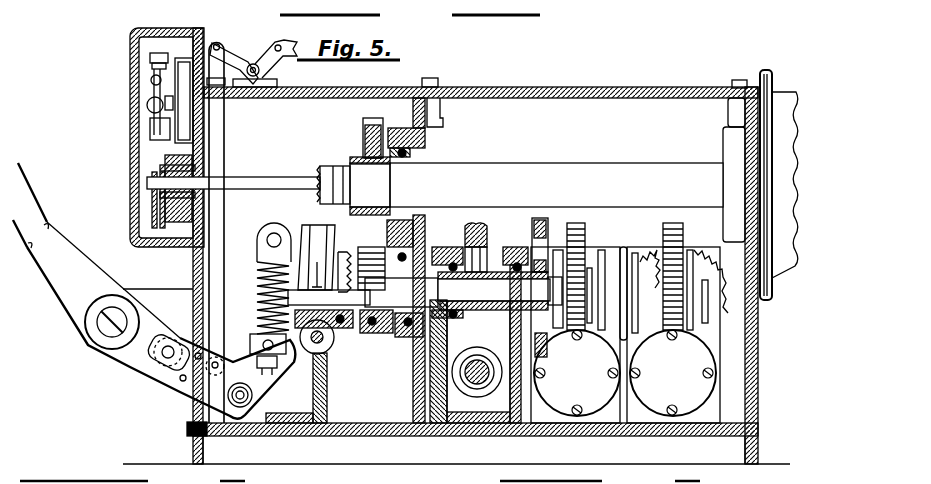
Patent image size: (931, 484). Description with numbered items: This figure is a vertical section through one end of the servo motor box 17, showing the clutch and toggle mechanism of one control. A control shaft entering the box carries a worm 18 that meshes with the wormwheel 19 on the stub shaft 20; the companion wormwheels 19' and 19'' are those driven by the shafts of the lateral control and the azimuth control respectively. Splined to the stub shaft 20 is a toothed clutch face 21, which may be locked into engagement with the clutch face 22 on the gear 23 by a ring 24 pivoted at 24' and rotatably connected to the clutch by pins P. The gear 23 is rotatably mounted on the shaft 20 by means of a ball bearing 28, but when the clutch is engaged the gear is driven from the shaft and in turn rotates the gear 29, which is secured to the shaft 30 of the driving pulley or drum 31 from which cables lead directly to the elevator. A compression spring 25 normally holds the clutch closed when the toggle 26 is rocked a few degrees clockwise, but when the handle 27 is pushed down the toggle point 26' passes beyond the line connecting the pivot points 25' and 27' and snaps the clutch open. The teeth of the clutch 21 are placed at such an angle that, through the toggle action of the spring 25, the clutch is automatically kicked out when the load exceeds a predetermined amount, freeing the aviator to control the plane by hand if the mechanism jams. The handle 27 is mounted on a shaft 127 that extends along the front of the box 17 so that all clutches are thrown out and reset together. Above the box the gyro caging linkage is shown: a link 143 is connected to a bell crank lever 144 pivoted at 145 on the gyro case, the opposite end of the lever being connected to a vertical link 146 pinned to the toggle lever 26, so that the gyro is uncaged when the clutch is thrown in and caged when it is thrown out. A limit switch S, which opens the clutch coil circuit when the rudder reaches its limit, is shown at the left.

The limit switch S is at (160, 92).
The bell crank lever 144 is at (270, 46).
The link 143 is at (286, 54).
The pivot 145 is at (252, 87).
The vertical link 146 is at (213, 157).
The gear 29 is at (363, 127).
The shaft 30 is at (435, 172).
The servo motor box 17 is at (627, 87).
The driving pulley or drum 31 is at (763, 72).
The handle 27 is at (154, 291).
The pivot point 25' is at (259, 230).
The ring 24 is at (329, 252).
The pins P is at (319, 270).
The toothed clutch face 21 is at (361, 258).
The compression spring 25 is at (255, 289).
The ball bearing 28 is at (401, 292).
The stub shaft 20 is at (497, 282).
The wormwheel 19'' is at (500, 245).
The wormwheel 19' is at (600, 274).
The wormwheel 19 is at (690, 274).
The toggle point 26' is at (248, 346).
The shaft 127 is at (104, 334).
The pivot 24' is at (307, 364).
The clutch face 22 is at (388, 330).
The gear 23 is at (336, 388).
The worm 18 is at (468, 382).
The toggle 26 is at (175, 426).
The pivot point 27' is at (260, 423).